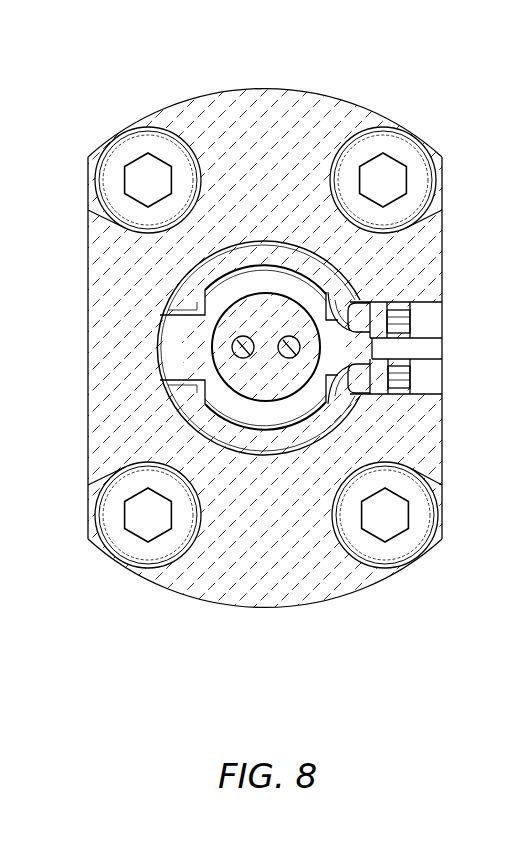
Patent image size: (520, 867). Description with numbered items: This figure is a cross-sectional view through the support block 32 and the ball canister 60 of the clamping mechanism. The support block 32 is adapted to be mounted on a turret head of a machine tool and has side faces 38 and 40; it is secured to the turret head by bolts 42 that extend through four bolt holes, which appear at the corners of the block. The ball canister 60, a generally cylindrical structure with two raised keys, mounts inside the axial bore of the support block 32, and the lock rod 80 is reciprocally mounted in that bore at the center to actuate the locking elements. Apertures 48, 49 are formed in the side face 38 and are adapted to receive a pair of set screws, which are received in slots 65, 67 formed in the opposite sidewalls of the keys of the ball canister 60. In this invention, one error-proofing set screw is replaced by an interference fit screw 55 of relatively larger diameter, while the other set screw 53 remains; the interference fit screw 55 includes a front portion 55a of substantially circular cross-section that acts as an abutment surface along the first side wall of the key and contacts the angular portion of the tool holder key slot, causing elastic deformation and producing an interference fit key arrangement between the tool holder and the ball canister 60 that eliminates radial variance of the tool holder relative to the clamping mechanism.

The support block 32 is at (266, 322).
The side face 38 is at (442, 447).
The side face 40 is at (237, 88).
The bolt 42 is at (403, 152).
The aperture 48 is at (427, 362).
The aperture 49 is at (428, 336).
The set screw 53 is at (412, 423).
The interference fit screw 55 is at (418, 257).
The front portion 55a is at (360, 303).
The ball canister 60 is at (258, 262).
The slot 65 is at (353, 410).
The slot 67 is at (353, 283).
The lock rod 80 is at (228, 336).